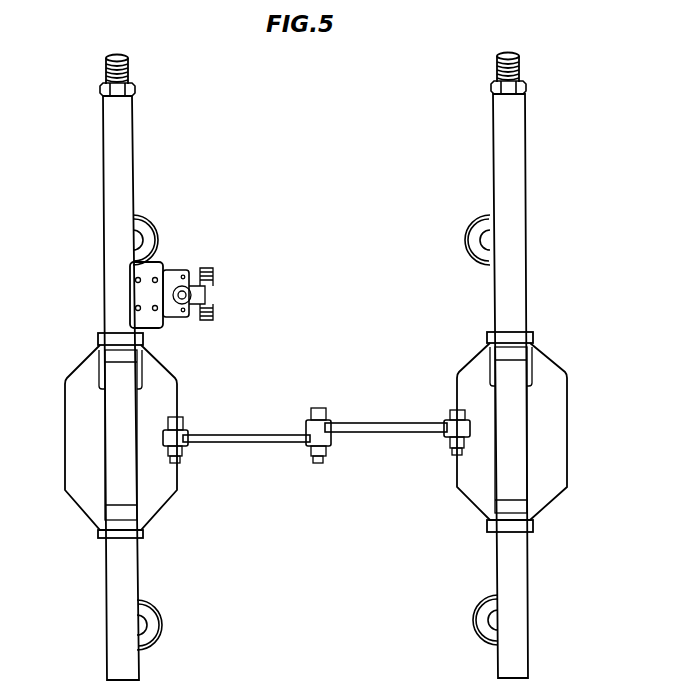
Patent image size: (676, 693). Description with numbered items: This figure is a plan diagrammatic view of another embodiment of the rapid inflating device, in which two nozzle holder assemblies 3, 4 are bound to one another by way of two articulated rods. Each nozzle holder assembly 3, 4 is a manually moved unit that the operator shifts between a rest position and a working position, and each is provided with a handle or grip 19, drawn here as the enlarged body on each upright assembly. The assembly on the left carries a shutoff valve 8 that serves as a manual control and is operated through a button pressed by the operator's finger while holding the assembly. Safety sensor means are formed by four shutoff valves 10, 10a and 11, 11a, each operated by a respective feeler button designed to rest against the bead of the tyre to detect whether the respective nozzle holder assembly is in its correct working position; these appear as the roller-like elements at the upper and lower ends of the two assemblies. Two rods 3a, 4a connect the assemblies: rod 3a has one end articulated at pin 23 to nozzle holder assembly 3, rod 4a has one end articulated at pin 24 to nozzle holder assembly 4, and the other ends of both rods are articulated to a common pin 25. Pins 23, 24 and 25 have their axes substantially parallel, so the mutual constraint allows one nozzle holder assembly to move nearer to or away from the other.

The nozzle holder assembly 3 is at (123, 152).
The nozzle holder assembly 4 is at (500, 133).
The rod 3a is at (238, 443).
The rod 4a is at (393, 422).
The shutoff valve 8 is at (183, 271).
The shutoff valve 10 is at (160, 627).
The shutoff valve 10a is at (160, 238).
The shutoff valve 11 is at (476, 620).
The shutoff valve 11a is at (478, 224).
The handle or grip 19 is at (75, 500).
The pin 23 is at (178, 464).
The pin 24 is at (453, 456).
The common pin 25 is at (320, 463).